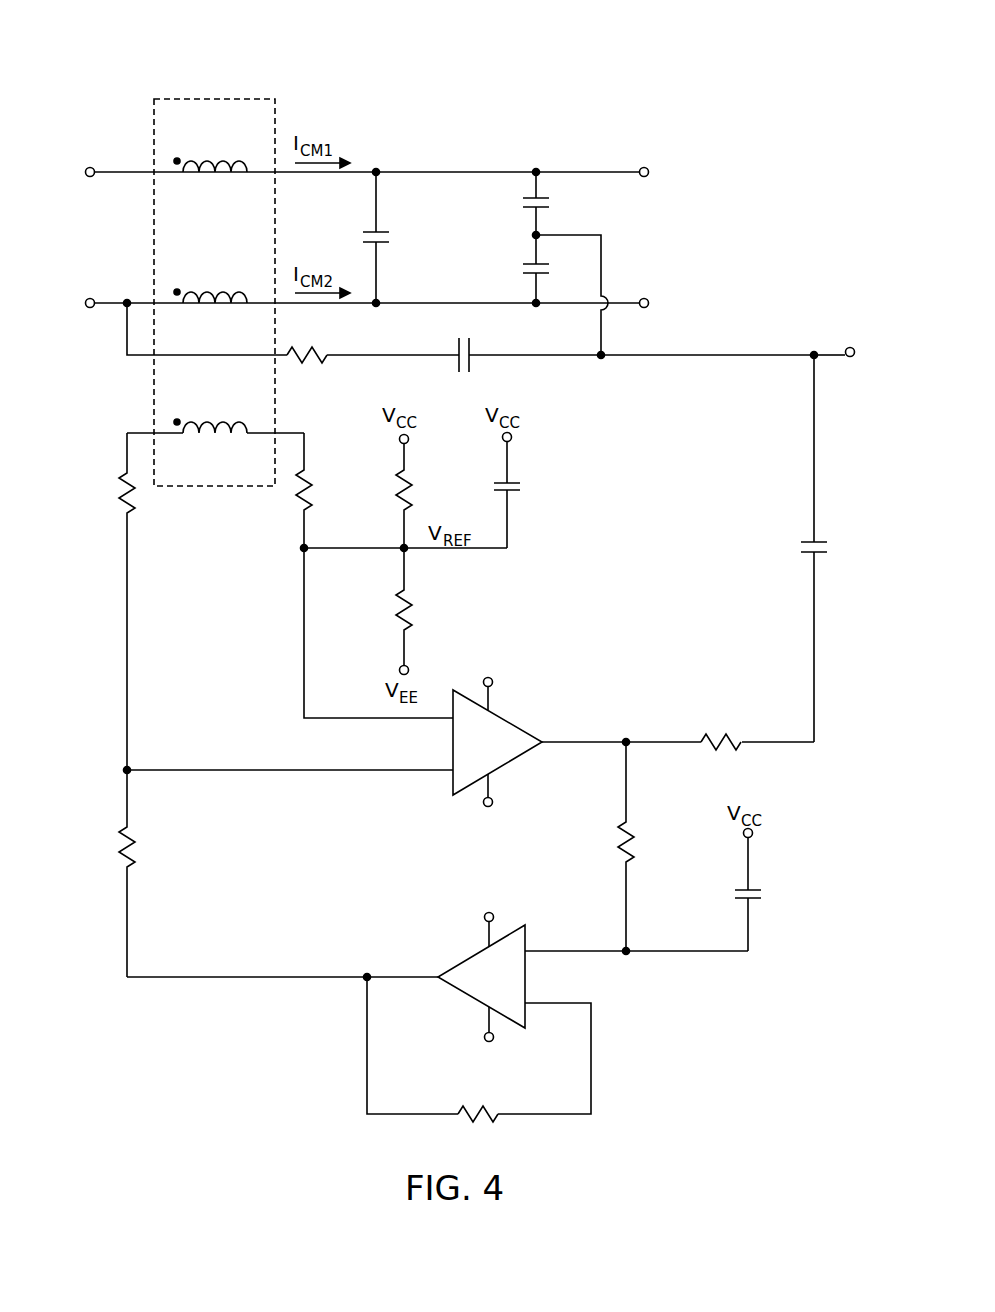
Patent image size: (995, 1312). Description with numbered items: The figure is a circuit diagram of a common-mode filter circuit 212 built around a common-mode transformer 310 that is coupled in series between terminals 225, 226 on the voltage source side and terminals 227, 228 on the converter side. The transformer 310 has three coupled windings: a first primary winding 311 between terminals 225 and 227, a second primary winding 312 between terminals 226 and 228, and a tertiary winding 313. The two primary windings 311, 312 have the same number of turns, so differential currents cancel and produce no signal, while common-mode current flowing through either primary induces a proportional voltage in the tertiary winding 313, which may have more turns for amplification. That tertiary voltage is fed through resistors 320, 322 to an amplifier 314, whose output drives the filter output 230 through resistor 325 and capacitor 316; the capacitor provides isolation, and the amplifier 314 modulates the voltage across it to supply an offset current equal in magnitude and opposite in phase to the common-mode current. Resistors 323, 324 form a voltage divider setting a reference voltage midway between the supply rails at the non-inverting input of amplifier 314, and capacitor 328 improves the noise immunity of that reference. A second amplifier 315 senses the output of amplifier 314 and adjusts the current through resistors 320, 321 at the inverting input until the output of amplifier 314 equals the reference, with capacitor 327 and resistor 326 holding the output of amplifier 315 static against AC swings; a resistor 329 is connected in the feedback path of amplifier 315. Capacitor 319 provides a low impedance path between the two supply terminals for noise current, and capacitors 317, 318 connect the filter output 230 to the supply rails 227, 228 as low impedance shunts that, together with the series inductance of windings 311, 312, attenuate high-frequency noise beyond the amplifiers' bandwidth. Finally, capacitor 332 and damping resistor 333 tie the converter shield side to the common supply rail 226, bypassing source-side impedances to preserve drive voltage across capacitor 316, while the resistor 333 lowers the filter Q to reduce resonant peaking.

The common-mode filter circuit 212 is at (128, 50).
The terminal 225 is at (90, 167).
The terminal 226 is at (90, 298).
The terminal 227 is at (647, 167).
The terminal 228 is at (647, 298).
The filter output 230 is at (852, 347).
The common-mode transformer 310 is at (222, 98).
The first primary winding 311 is at (218, 163).
The second primary winding 312 is at (218, 294).
The tertiary winding 313 is at (218, 424).
The amplifier 314 is at (505, 714).
The amplifier 315 is at (476, 950).
The capacitor 316 is at (826, 549).
The capacitor 317 is at (552, 202).
The capacitor 318 is at (522, 270).
The capacitor 319 is at (392, 239).
The resistor 320 is at (122, 490).
The resistor 321 is at (122, 846).
The resistor 322 is at (298, 498).
The resistor 323 is at (400, 508).
The resistor 324 is at (410, 610).
The resistor 325 is at (722, 748).
The resistor 326 is at (621, 846).
The capacitor 327 is at (762, 895).
The capacitor 328 is at (521, 490).
The resistor 329 is at (480, 1122).
The capacitor 332 is at (456, 347).
The damping resistor 333 is at (312, 362).